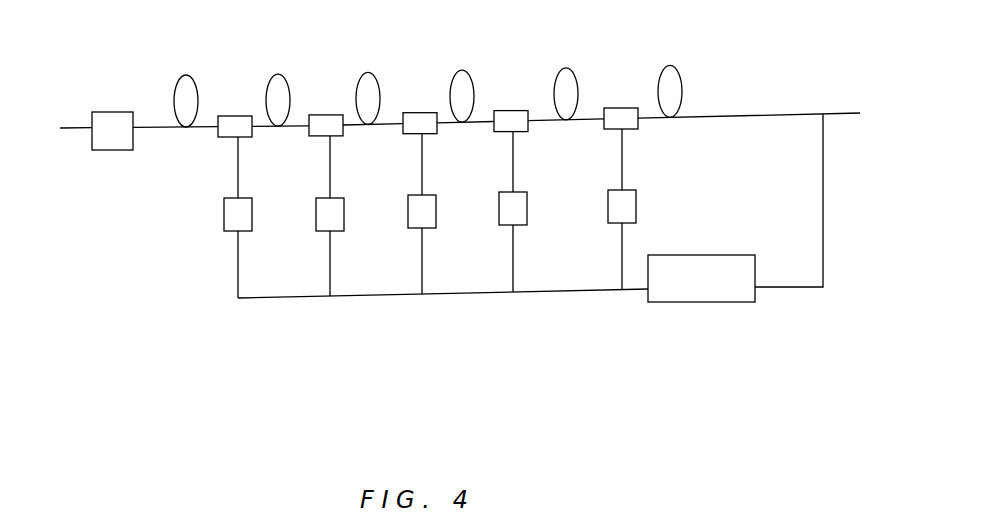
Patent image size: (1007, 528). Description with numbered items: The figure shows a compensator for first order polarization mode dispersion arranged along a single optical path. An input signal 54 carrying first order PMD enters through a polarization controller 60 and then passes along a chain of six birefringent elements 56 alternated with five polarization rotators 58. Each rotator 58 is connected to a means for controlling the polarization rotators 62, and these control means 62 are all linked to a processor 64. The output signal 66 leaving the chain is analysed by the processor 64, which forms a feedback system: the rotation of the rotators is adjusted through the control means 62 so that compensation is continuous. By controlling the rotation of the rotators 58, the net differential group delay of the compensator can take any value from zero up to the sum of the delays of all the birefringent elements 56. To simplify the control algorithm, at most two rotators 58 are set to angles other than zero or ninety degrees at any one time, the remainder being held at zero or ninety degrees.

The input signal 54 is at (75, 128).
The birefringent elements 56 is at (662, 78).
The polarization rotators 58 is at (619, 108).
The polarization controller 60 is at (112, 150).
The means for controlling the polarization rotators 62 is at (608, 210).
The processor 64 is at (703, 302).
The output signal 66 is at (837, 114).